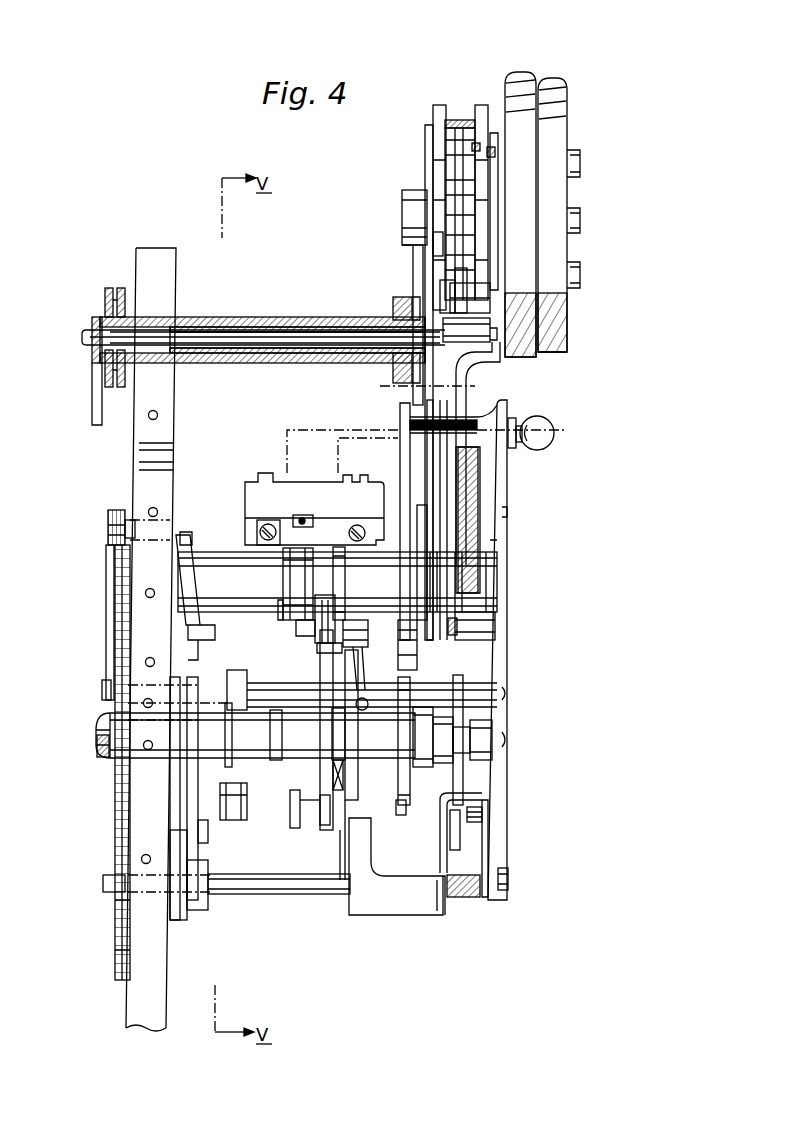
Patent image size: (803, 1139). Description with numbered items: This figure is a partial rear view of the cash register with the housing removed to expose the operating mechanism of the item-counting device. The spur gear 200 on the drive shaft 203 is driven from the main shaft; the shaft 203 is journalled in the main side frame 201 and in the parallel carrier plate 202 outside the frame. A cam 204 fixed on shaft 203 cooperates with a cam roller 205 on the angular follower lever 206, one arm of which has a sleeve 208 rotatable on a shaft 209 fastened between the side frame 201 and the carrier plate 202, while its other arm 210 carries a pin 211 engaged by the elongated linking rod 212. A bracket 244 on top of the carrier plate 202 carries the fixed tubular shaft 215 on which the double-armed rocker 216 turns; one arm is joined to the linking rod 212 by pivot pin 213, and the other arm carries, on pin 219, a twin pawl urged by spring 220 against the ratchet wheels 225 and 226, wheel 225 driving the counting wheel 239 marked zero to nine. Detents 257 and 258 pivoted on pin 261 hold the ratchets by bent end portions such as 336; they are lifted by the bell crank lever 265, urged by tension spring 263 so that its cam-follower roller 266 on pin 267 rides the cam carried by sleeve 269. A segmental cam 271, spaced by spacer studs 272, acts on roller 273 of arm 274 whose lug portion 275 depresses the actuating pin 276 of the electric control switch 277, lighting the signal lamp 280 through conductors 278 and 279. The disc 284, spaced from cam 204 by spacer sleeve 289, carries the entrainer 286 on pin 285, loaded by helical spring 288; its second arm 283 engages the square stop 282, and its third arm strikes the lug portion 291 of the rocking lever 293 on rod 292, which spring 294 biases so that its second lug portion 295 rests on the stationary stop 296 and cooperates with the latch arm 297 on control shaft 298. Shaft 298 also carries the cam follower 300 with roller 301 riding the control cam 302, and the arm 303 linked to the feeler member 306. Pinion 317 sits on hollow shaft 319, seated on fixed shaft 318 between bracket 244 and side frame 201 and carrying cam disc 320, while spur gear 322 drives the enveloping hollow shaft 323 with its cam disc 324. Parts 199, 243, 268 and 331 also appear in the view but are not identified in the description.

The gear wheel 199 is at (118, 943).
The spur gear 200 is at (116, 831).
The main side frame 201 is at (145, 490).
The carrier plate 202 is at (497, 622).
The drive shaft 203 is at (100, 726).
The cam 204 is at (405, 804).
The cam roller 205 is at (417, 655).
The angular follower lever 206 is at (500, 600).
The sleeve 208 is at (500, 577).
The shaft 209 is at (508, 590).
The arm 210 is at (505, 507).
The pin 211 is at (482, 540).
The linking rod 212 is at (505, 422).
The pivot pin 213 is at (430, 243).
The tubular shaft 215 is at (405, 208).
The double-armed rocker 216 is at (428, 142).
The pin 219 is at (493, 146).
The spring 220 is at (460, 120).
The ratchet wheel 225 is at (481, 105).
The ratchet wheel 226 is at (441, 105).
The counting wheel 239 is at (523, 80).
The counter drum 243 is at (558, 88).
The bracket 244 is at (420, 285).
The detent 257 is at (461, 362).
The detent 258 is at (553, 353).
The pin 261 is at (500, 333).
The helical tension spring 263 is at (480, 558).
The bell crank lever 265 is at (296, 580).
The cam-follower roller 266 is at (316, 640).
The pin 267 is at (317, 632).
The lever 268 is at (346, 790).
The sleeve 269 is at (330, 735).
The segmentally shaped cam 271 is at (293, 828).
The spacer studs 272 is at (310, 826).
The roller 273 is at (270, 610).
The arm 274 is at (283, 577).
The lug portion 275 is at (252, 518).
The actuating pin 276 is at (302, 515).
The electric control switch 277 is at (272, 497).
The conductor 278 is at (306, 430).
The conductor 279 is at (362, 437).
The signal lamp 280 is at (556, 438).
The square stop 282 is at (340, 792).
The arm 283 is at (355, 612).
The disc 284 is at (346, 683).
The pin 285 is at (368, 642).
The entrainer 286 is at (366, 672).
The helical spring 288 is at (370, 709).
The spacer sleeve 289 is at (390, 763).
The lug portion 291 is at (347, 862).
The rod 292 is at (260, 896).
The rocking lever 293 is at (407, 915).
The spring 294 is at (472, 898).
The lug portion 295 is at (466, 790).
The stationary stop 296 is at (482, 816).
The latch arm 297 is at (460, 842).
The control shaft 298 is at (103, 690).
The cam follower 300 is at (237, 798).
The roller 301 is at (225, 822).
The control cam 302 is at (223, 767).
The arm 303 is at (110, 663).
The feeler member 306 is at (118, 512).
The pinion 317 is at (108, 294).
The fixed shaft 318 is at (82, 342).
The hollow shaft 319 is at (236, 317).
The cam disc 320 is at (412, 300).
The spur gear 322 is at (121, 288).
The hollow shaft 323 is at (292, 327).
The cam disc 324 is at (393, 305).
The pin 331 is at (443, 300).
The end portion 336 is at (490, 298).